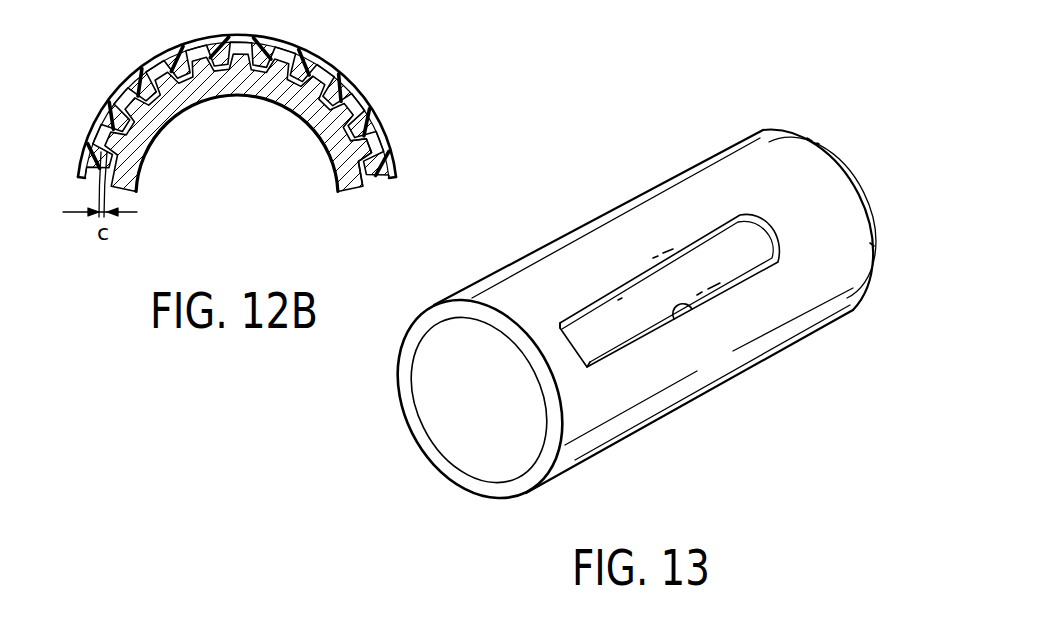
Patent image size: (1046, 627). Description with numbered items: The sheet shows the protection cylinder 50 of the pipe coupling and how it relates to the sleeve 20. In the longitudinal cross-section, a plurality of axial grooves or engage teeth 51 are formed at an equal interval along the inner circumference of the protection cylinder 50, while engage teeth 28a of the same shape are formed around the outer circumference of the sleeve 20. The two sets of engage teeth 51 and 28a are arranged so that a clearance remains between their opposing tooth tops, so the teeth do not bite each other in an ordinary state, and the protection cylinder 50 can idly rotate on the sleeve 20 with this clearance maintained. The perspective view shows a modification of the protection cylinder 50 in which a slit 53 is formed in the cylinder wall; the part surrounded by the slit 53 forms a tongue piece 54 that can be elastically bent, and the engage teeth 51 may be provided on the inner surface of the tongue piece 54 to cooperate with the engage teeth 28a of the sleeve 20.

In FIG. 12B, the sleeve 20 is at (330, 158).
In FIG. 12B, the engage teeth 28a is at (360, 167).
In FIG. 12B, the protection cylinder 50 is at (310, 63).
In FIG. 13, the protection cylinder 50 is at (647, 220).
In FIG. 12B, the engage teeth 51 is at (377, 120).
In FIG. 13, the slit 53 is at (690, 307).
In FIG. 13, the tongue piece 54 is at (733, 267).